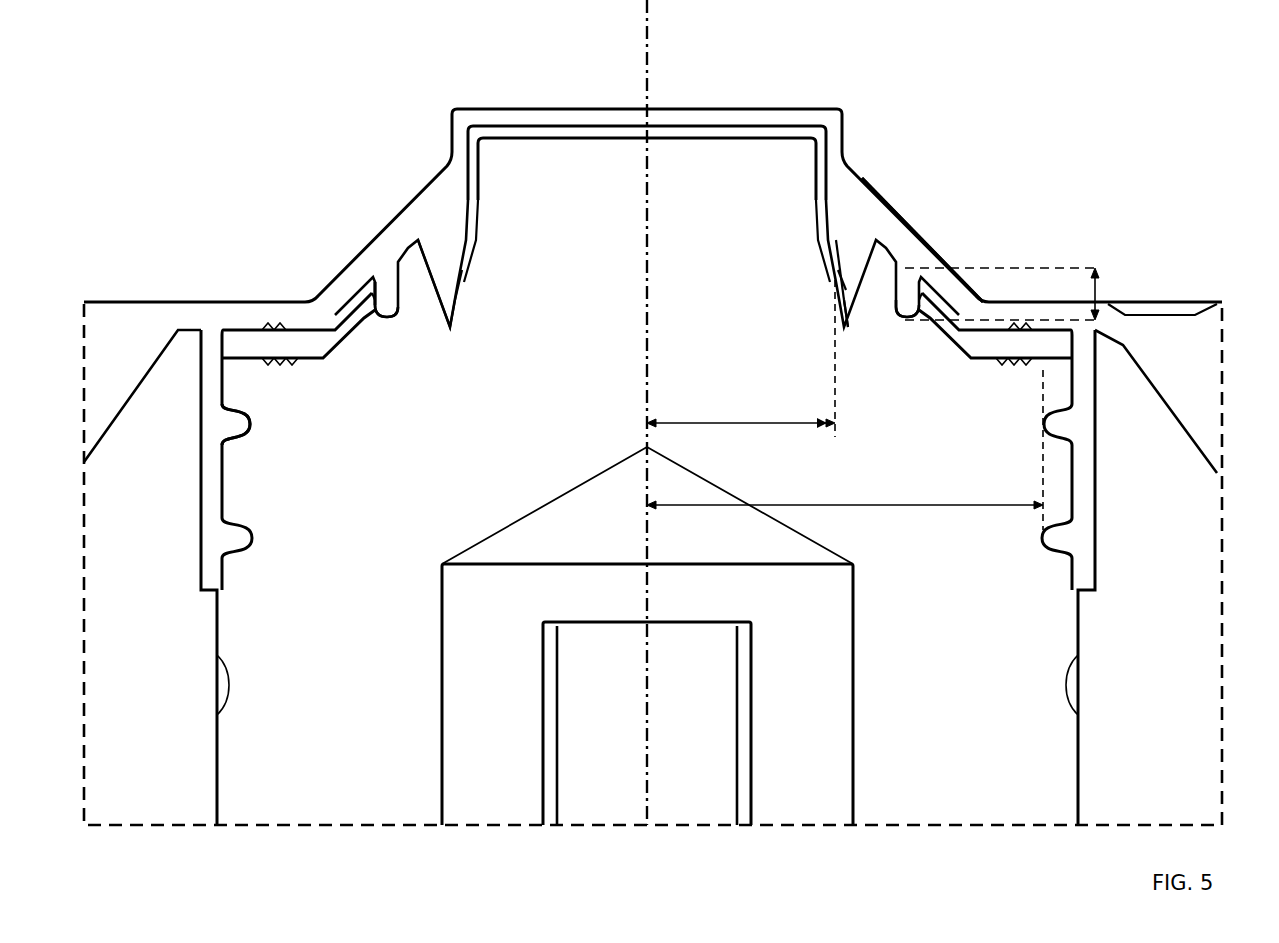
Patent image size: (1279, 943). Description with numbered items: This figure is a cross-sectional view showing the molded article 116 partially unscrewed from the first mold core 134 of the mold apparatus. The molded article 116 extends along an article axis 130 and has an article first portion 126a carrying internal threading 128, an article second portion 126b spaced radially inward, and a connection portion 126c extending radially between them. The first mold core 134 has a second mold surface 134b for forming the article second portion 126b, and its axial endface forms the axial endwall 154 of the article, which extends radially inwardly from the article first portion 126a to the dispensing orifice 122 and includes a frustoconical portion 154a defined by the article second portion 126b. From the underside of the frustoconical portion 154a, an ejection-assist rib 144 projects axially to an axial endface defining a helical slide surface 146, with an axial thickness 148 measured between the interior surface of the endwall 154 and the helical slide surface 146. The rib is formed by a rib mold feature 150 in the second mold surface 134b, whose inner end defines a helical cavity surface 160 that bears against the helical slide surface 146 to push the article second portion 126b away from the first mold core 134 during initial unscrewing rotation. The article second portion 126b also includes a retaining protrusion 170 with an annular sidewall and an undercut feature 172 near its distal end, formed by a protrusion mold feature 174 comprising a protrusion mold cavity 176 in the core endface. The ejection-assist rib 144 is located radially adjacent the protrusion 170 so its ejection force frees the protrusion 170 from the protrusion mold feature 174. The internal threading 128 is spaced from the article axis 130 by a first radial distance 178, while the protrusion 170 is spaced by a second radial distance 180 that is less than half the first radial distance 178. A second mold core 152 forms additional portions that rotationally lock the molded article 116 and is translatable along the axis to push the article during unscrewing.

The molded article 116 is at (350, 79).
The dispensing orifice 122 is at (512, 116).
The article axis 130 is at (648, 52).
The first mold core 134 is at (607, 438).
The second mold surface 134b is at (389, 294).
The article first portion 126a is at (226, 446).
The article second portion 126b is at (419, 264).
The connection portion 126c is at (323, 320).
The internal threading 128 is at (244, 424).
The ejection-assist rib 144 is at (368, 296).
The helical slide surface 146 is at (384, 320).
The axial thickness 148 is at (1102, 286).
The rib mold feature 150 is at (385, 291).
The second mold core 152 is at (1184, 576).
The axial endwall 154 is at (895, 232).
The frustoconical portion 154a is at (922, 240).
The helical cavity surface 160 is at (894, 312).
The protrusion 170 is at (848, 247).
The undercut feature 172 is at (836, 273).
The protrusion mold feature 174 is at (857, 290).
The protrusion mold cavity 176 is at (846, 313).
The first radial distance 178 is at (887, 510).
The second radial distance 180 is at (748, 428).